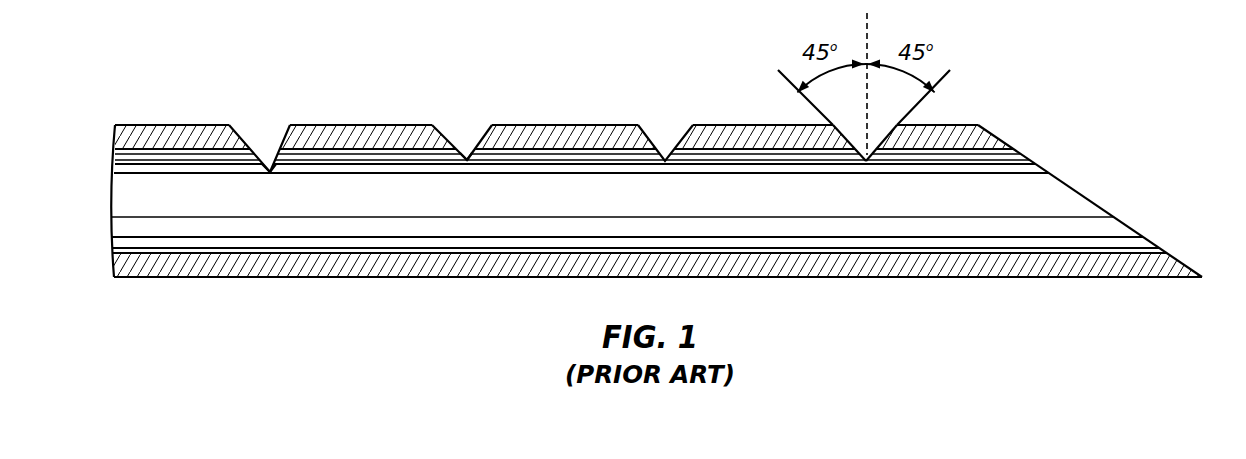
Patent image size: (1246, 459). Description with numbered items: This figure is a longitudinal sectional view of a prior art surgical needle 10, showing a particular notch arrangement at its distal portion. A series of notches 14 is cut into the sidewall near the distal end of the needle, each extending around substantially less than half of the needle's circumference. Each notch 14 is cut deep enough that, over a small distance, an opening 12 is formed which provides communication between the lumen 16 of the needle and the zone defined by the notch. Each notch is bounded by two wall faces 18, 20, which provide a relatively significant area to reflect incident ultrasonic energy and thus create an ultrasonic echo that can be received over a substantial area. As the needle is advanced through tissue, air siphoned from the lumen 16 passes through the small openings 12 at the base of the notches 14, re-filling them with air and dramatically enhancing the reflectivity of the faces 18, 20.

The surgical needle 10 is at (274, 300).
The opening 12 is at (278, 109).
The notch 14 is at (271, 172).
The lumen 16 is at (1052, 195).
The first wall face 18 is at (447, 128).
The second wall face 20 is at (489, 127).